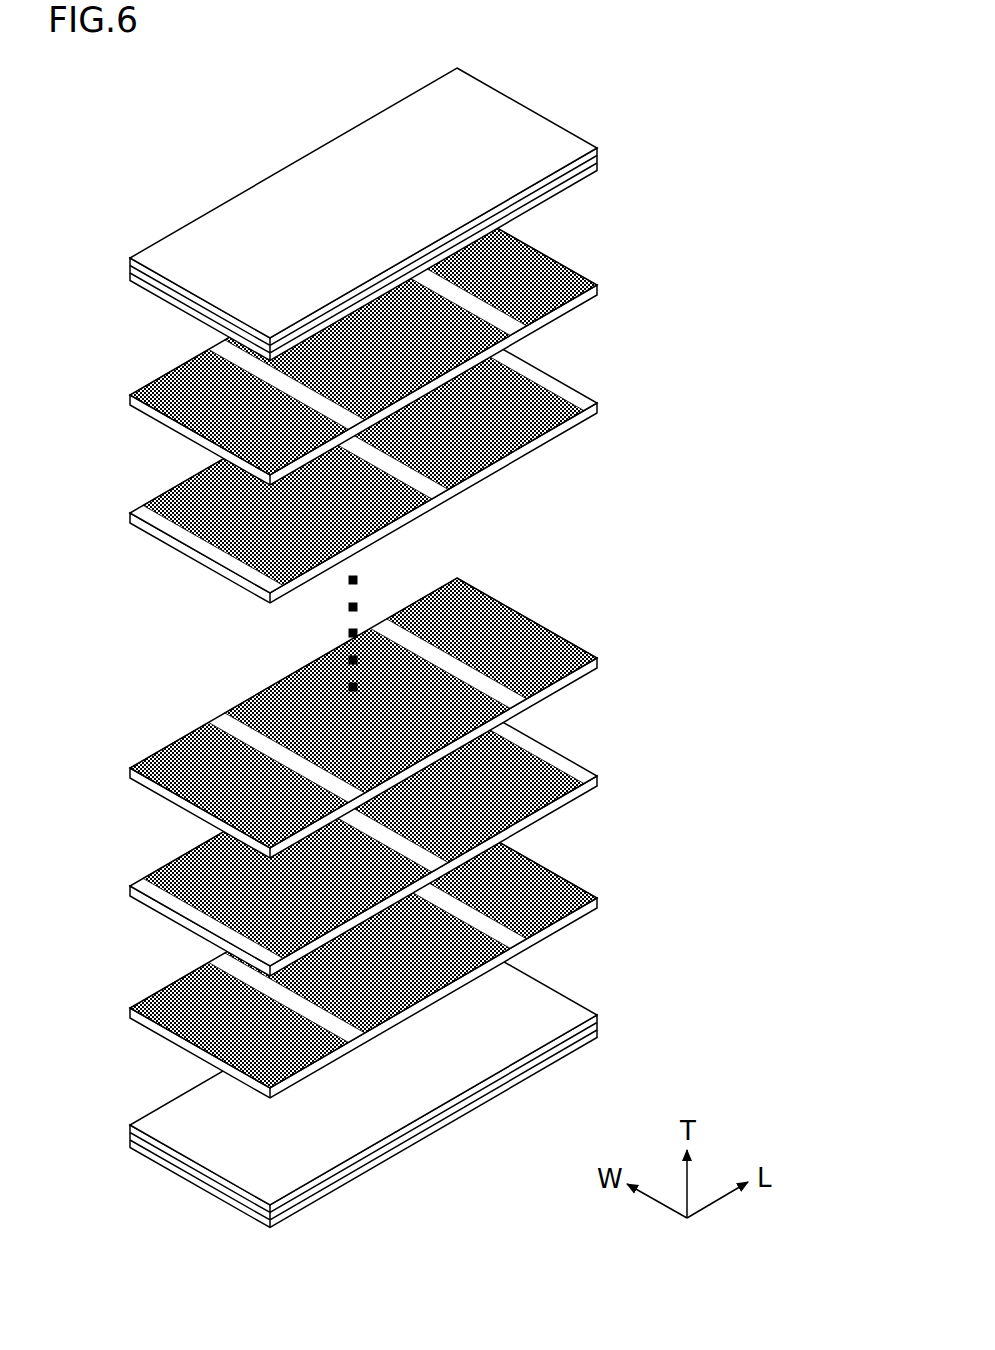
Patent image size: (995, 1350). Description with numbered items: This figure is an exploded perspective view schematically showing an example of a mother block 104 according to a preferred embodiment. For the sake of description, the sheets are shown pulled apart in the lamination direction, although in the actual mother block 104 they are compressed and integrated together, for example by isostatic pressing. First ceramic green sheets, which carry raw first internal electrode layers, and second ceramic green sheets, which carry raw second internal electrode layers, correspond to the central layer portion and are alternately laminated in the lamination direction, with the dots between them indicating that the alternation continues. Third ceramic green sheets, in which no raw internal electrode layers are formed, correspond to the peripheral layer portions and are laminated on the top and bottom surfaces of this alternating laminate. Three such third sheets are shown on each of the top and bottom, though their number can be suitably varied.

The mother block 104 is at (170, 108).